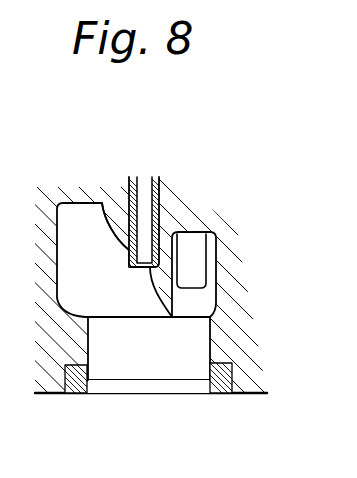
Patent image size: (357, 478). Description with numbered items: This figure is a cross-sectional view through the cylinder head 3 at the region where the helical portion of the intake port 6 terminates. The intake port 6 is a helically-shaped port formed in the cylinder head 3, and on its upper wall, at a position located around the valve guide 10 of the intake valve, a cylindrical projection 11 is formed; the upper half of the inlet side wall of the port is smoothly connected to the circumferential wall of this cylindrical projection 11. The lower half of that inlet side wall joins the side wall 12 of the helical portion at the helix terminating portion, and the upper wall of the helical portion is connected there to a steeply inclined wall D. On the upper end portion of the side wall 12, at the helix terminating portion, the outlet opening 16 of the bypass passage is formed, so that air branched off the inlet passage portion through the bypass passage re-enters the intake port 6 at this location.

The cylinder head 3 is at (229, 234).
The intake port 6 is at (102, 278).
The valve guide 10 is at (160, 198).
The cylindrical projection 11 is at (125, 247).
The side wall of the helical portion 12 is at (222, 298).
The outlet opening 16 is at (196, 255).
The steeply inclined wall D is at (168, 270).